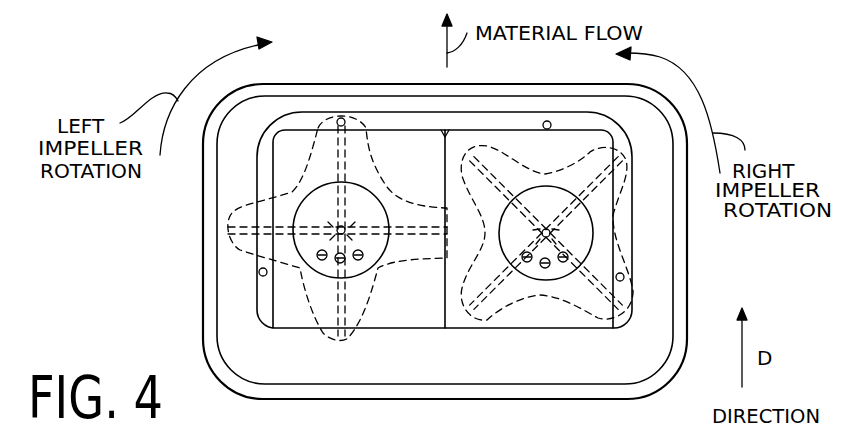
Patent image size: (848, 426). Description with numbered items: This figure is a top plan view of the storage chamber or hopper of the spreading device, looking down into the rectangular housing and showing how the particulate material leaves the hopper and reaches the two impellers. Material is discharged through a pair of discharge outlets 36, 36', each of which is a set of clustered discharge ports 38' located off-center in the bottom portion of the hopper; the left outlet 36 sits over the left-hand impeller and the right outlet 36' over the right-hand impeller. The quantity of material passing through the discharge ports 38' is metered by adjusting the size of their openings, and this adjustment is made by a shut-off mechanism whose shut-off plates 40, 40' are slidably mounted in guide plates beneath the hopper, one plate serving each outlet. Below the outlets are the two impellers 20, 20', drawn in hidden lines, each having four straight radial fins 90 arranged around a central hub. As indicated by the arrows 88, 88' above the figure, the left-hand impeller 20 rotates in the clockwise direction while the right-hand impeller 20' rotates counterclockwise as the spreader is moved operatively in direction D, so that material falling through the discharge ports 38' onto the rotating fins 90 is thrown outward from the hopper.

The left-hand impeller 20 is at (361, 254).
The right-hand impeller 20' is at (537, 250).
The discharge outlet 36 is at (261, 247).
The discharge outlet 36' is at (579, 200).
The discharge ports 38' is at (409, 308).
The shut-off plate 40 is at (392, 292).
The shut-off plate 40' is at (631, 238).
The arrow 88 is at (445, 238).
The arrow 88' is at (479, 217).
The radial fins 90 is at (493, 178).